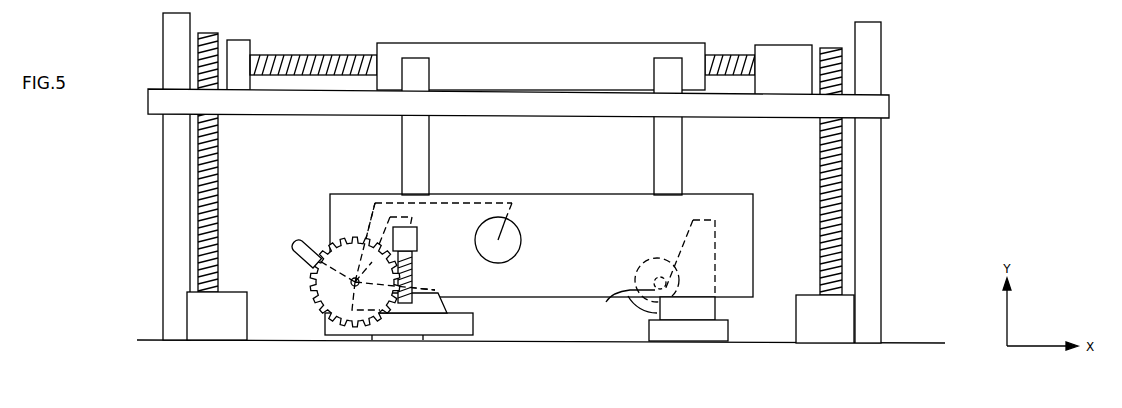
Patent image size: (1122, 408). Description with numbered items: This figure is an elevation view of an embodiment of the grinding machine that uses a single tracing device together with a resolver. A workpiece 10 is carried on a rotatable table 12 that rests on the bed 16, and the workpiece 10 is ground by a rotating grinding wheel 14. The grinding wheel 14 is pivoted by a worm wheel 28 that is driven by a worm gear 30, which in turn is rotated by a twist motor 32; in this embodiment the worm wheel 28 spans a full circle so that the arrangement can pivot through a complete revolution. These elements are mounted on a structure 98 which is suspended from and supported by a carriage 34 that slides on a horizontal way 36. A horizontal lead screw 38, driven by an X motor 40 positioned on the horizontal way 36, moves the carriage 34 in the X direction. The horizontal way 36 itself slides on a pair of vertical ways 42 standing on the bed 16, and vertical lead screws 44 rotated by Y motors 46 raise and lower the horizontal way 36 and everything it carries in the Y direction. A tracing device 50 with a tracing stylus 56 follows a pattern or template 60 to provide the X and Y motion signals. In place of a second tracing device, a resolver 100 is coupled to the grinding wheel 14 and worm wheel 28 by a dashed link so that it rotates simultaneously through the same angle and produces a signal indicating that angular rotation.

The workpiece 10 is at (447, 306).
The rotatable table 12 is at (473, 328).
The grinding wheel 14 is at (297, 247).
The bed 16 is at (700, 365).
The worm wheel 28 is at (343, 240).
The worm gear 30 is at (410, 290).
The twist motor 32 is at (417, 234).
The carriage 34 is at (516, 43).
The horizontal way 36 is at (728, 118).
The horizontal lead screw 38 is at (329, 55).
The X motor 40 is at (778, 45).
The vertical ways 42 is at (163, 14).
The vertical lead screws 44 is at (220, 147).
The Y motor 46 is at (243, 292).
The tracing device 50 is at (640, 268).
The tracing stylus 56 is at (624, 305).
The pattern 60 is at (715, 312).
The structure 98 is at (706, 194).
The resolver 100 is at (521, 233).